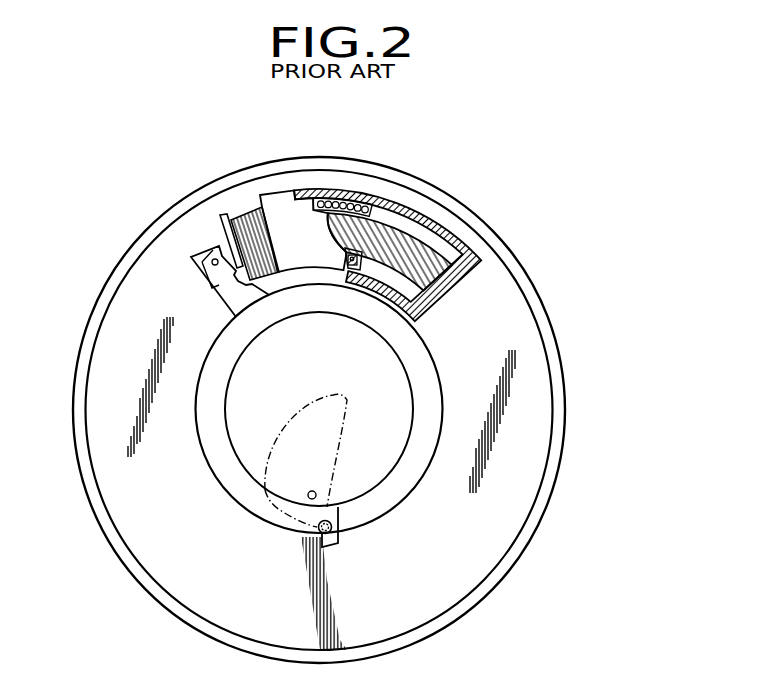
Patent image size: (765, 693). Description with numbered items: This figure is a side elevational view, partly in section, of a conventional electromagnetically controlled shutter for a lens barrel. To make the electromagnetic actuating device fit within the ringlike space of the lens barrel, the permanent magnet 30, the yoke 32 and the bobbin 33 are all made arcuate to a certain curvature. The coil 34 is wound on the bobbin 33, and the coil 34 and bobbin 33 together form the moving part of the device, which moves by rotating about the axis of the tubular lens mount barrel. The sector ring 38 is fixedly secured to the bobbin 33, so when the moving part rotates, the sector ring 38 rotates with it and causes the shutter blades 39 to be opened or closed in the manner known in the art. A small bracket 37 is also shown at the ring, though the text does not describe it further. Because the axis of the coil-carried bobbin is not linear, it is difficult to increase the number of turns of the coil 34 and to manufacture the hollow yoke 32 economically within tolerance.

The permanent magnet 30 is at (423, 257).
The yoke 32 is at (407, 208).
The bobbin 33 is at (228, 243).
The coil 34 is at (243, 216).
The bracket 37 is at (212, 277).
The sector ring 38 is at (217, 450).
The shutter blades 39 is at (333, 416).